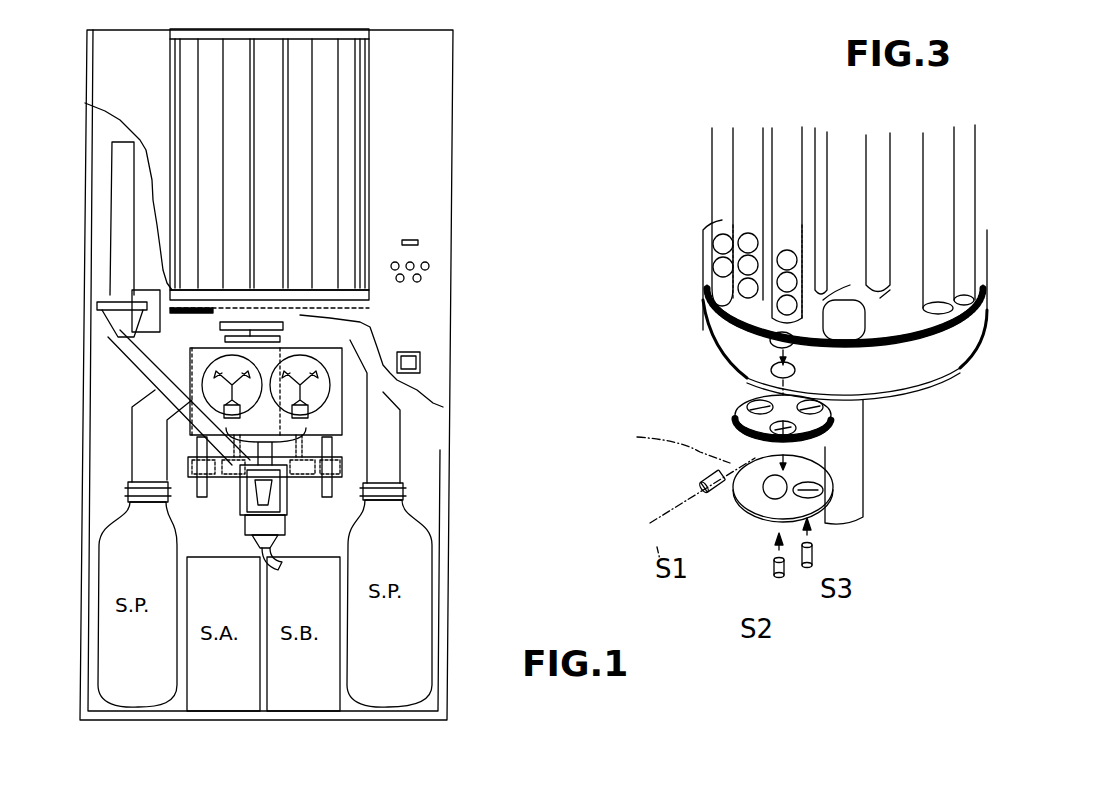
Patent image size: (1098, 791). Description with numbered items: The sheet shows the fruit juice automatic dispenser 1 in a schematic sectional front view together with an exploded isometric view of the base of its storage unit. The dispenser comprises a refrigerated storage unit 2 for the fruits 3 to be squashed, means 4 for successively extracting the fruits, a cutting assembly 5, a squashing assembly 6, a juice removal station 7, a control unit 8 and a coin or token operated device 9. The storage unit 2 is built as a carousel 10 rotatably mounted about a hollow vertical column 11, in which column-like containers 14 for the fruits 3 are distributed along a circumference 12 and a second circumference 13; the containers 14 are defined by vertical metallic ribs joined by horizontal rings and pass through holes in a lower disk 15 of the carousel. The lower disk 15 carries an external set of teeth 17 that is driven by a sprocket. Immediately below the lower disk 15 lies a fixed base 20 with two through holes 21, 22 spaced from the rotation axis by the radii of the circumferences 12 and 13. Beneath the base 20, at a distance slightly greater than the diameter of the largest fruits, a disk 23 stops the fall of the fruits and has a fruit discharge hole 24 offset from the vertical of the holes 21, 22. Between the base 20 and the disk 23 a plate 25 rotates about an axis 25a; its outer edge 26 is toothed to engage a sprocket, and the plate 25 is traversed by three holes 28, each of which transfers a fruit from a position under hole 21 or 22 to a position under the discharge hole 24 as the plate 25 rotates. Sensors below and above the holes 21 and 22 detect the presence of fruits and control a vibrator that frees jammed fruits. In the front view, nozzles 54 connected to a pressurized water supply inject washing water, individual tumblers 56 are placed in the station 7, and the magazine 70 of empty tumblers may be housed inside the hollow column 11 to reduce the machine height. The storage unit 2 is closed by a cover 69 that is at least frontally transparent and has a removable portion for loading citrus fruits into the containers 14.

In FIG. 1, the fruit juice automatic dispenser 1 is at (464, 296).
In FIG. 1, the refrigerated storage unit 2 is at (363, 150).
In FIG. 3, the fruits 3 is at (752, 262).
In FIG. 1, the means for successively extracting the fruits 4 is at (322, 333).
In FIG. 3, the means for successively extracting the fruits 4 is at (967, 460).
In FIG. 1, the cutting assembly 5 is at (357, 355).
In FIG. 1, the squashing assembly 6 is at (347, 427).
In FIG. 1, the juice removal station 7 is at (297, 495).
In FIG. 1, the control unit 8 is at (432, 265).
In FIG. 1, the coin or token operated device 9 is at (420, 242).
In FIG. 3, the carousel 10 is at (983, 215).
In FIG. 3, the hollow vertical column 11 is at (847, 152).
In FIG. 3, the circumference 12 is at (960, 289).
In FIG. 3, the second circumference 13 is at (790, 322).
In FIG. 3, the column-like containers 14 is at (908, 207).
In FIG. 3, the lower disk 15 is at (930, 317).
In FIG. 3, the external set of teeth 17 is at (703, 277).
In FIG. 3, the fixed base 20 is at (965, 358).
In FIG. 3, the through hole 21 is at (775, 368).
In FIG. 3, the through hole 22 is at (810, 352).
In FIG. 3, the disk for stopping the fall of the fruits 23 is at (747, 483).
In FIG. 3, the fruit discharge hole 24 is at (813, 488).
In FIG. 3, the plate 25 is at (740, 410).
In FIG. 3, the axis 25a is at (670, 473).
In FIG. 3, the outer edge 26 is at (745, 465).
In FIG. 3, the hole 28 is at (830, 433).
In FIG. 1, the nozzles 54 is at (273, 463).
In FIG. 1, the tumblers 56 is at (262, 498).
In FIG. 1, the cover 69 is at (175, 80).
In FIG. 1, the magazine of empty tumblers 70 is at (110, 232).